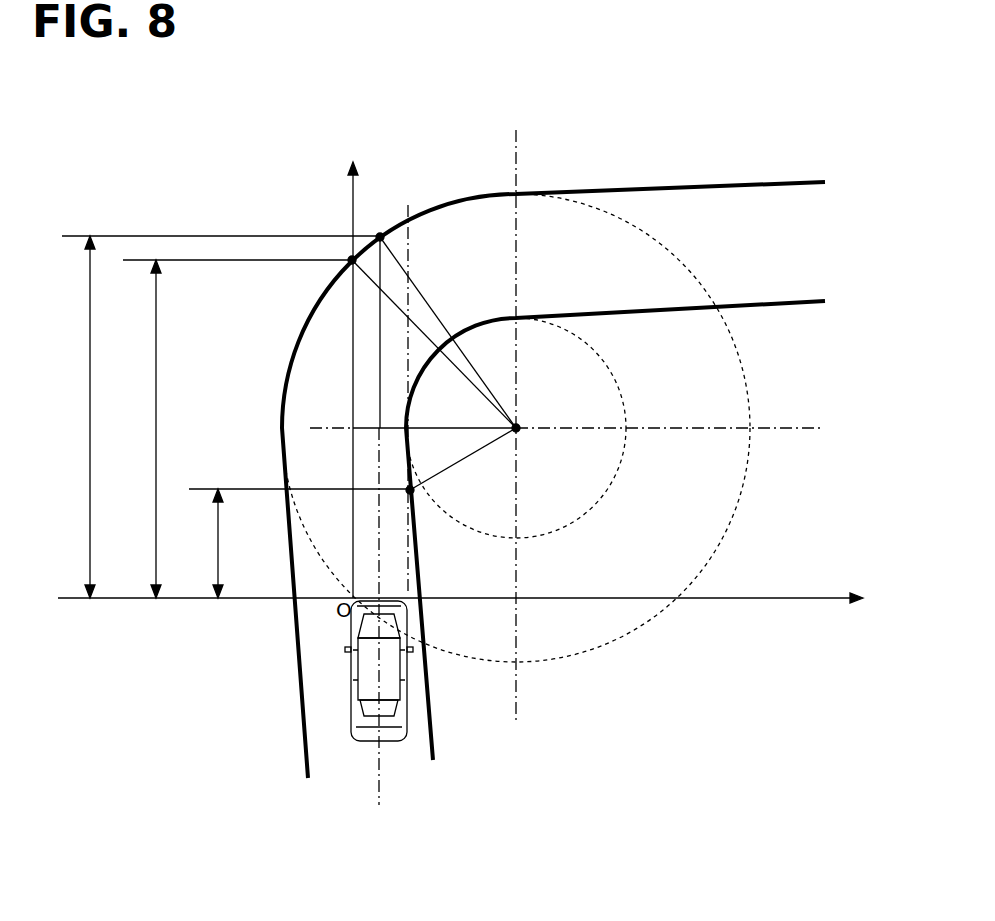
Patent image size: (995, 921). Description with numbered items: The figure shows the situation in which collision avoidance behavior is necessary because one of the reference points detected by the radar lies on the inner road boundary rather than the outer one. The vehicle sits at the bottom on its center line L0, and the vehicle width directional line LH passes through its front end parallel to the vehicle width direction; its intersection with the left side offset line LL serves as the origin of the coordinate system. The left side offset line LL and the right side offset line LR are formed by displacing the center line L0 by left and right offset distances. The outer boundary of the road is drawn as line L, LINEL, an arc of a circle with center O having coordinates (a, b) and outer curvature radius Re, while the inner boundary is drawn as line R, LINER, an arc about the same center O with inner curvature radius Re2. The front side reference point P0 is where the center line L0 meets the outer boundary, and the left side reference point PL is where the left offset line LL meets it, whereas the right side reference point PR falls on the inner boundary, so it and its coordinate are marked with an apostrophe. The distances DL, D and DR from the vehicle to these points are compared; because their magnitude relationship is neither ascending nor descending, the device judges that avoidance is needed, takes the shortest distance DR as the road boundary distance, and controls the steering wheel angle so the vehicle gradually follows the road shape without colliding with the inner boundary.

The front side reference point P0 is at (373, 224).
The left side reference point PL is at (350, 261).
The right side reference point PR is at (414, 495).
The center O is at (549, 443).
The outer curvature radius Re is at (416, 285).
The inner curvature radius Re2 is at (442, 472).
The distance D is at (81, 417).
The distance DL is at (144, 429).
The distance DR is at (203, 543).
The left side offset line LL is at (353, 552).
The right side offset line LR is at (418, 578).
The center line L0 is at (379, 787).
The vehicle width directional line LH is at (688, 600).
The line L LINEL is at (553, 465).
The line R LINER is at (615, 514).